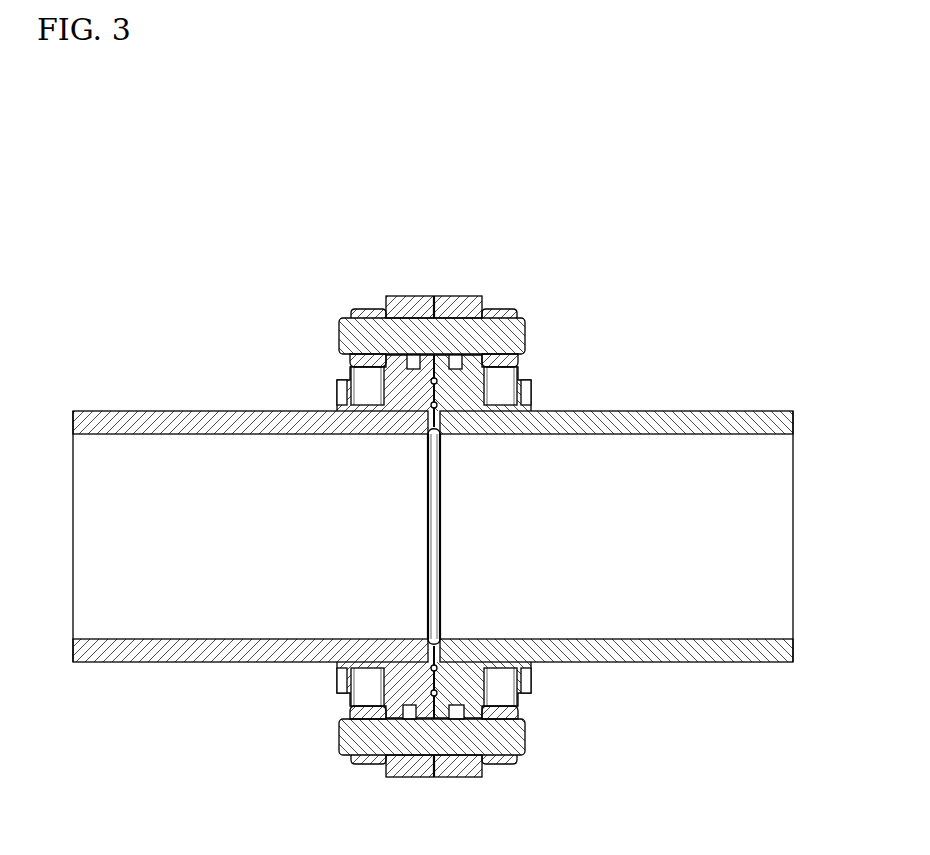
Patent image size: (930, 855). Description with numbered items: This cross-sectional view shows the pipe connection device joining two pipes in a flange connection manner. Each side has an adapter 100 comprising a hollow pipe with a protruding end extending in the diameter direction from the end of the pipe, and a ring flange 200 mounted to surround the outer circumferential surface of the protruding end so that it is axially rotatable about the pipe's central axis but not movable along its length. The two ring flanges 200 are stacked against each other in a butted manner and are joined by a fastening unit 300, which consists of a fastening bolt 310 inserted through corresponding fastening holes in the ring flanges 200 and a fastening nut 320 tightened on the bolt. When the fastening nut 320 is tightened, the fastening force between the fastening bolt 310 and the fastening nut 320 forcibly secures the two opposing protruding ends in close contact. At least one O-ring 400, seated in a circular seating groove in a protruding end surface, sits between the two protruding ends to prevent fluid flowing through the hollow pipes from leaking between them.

The adapter 100 is at (122, 410).
The ring flange 200 is at (405, 302).
The fastening unit 300 is at (435, 538).
The fastening bolt 310 is at (530, 335).
The fastening nut 320 is at (508, 313).
The O-ring 400 is at (437, 669).